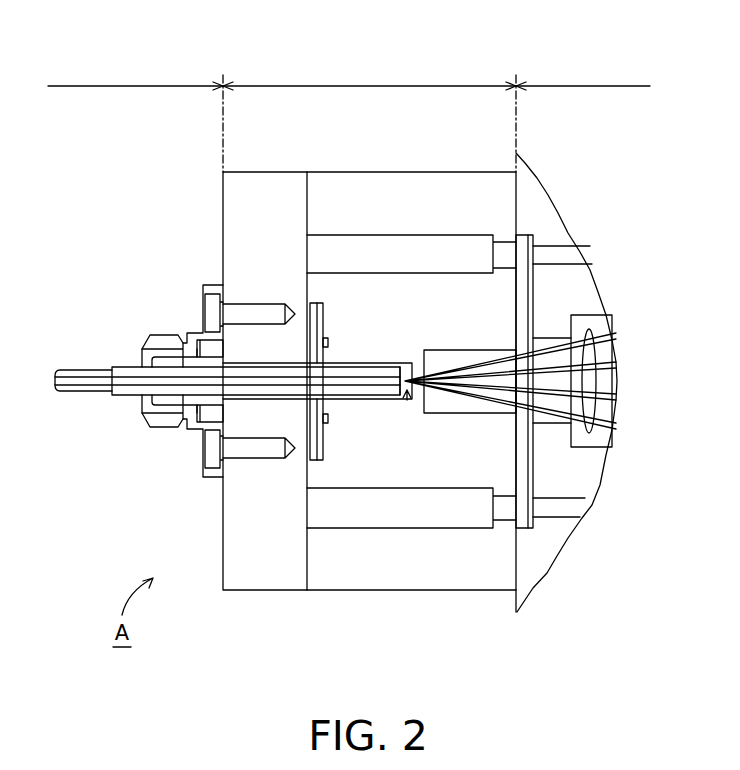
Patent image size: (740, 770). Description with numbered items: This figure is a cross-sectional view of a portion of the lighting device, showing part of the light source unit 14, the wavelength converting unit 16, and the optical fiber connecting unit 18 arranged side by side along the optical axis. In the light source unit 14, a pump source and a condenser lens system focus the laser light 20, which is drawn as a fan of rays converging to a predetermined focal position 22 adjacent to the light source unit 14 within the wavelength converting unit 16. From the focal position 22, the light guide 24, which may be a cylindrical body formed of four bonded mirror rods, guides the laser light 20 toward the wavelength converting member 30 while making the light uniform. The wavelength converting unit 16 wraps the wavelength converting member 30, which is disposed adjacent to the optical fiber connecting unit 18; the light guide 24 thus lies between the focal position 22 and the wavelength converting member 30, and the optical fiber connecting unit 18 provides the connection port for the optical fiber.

The light source unit 14 is at (586, 86).
The wavelength converting unit 16 is at (371, 86).
The optical fiber connecting unit 18 is at (122, 86).
The laser light 20 is at (604, 352).
The focal position 22 is at (407, 398).
The light guide 24 is at (370, 383).
The wavelength converting member 30 is at (313, 432).